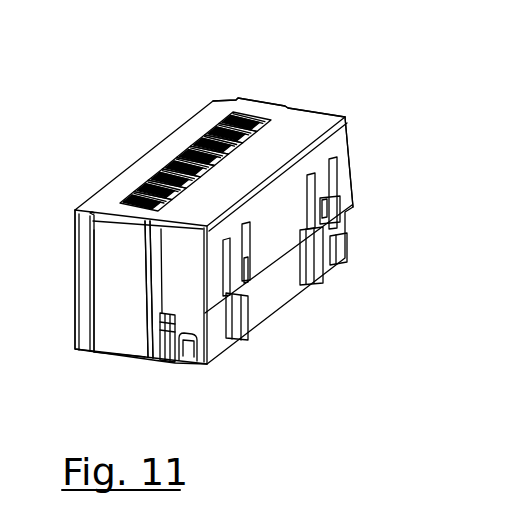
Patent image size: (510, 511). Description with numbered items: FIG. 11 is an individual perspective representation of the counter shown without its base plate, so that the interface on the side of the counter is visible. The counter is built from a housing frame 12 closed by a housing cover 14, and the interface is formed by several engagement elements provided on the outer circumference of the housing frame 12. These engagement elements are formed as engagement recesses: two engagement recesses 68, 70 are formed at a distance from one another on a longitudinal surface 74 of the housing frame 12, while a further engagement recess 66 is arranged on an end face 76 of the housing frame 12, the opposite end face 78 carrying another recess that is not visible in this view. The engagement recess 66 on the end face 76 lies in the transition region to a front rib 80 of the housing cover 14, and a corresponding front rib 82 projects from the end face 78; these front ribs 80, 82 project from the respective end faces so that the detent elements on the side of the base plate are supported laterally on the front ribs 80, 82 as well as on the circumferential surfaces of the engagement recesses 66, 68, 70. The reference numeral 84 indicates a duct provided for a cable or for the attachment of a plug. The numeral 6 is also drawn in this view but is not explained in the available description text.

The connection terminal 6 is at (103, 287).
The housing frame 12 is at (350, 227).
The housing cover 14 is at (127, 179).
The engagement recess 66 is at (170, 350).
The engagement recess 68 is at (254, 306).
The engagement recess 70 is at (304, 264).
The longitudinal surface 74 is at (268, 290).
The end face 76 is at (170, 282).
The end face 78 is at (312, 112).
The front rib 80 is at (113, 283).
The front rib 82 is at (267, 100).
The duct 84 is at (333, 263).